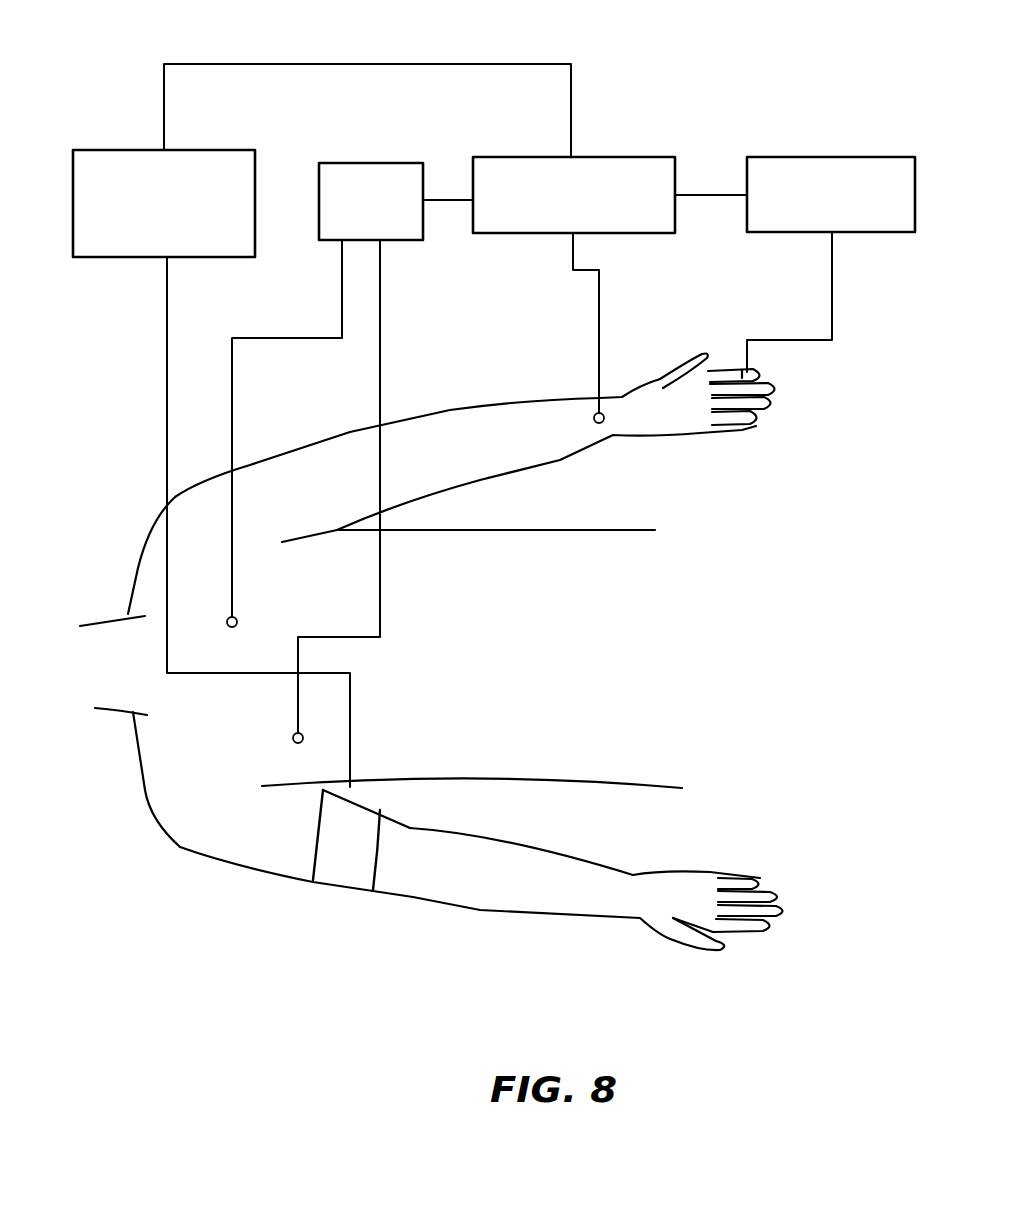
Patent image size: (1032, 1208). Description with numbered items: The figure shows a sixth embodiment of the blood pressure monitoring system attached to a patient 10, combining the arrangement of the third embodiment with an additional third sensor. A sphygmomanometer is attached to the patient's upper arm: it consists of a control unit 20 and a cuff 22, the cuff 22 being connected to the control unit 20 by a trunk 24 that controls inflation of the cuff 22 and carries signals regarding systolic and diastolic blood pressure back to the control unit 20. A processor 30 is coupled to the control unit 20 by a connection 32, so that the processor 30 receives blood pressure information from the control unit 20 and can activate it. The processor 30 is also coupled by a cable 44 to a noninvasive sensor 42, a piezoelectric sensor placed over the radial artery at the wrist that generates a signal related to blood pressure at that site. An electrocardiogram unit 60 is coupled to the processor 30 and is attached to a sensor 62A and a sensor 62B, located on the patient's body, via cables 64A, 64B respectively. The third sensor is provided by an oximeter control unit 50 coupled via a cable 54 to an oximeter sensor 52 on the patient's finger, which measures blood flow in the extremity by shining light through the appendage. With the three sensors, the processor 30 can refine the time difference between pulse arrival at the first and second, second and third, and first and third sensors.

The patient 10 is at (138, 568).
The control unit 20 is at (192, 150).
The cuff 22 is at (378, 803).
The trunk 24 is at (352, 712).
The processor 30 is at (590, 157).
The processor-cuff connection line 32 is at (530, 62).
The noninvasive sensor 42 is at (604, 424).
The cable 44 is at (598, 290).
The oximeter control unit 50 is at (867, 157).
The oximeter sensor 52 is at (740, 367).
The cable 54 is at (832, 287).
The electrocardiogram (ECG) unit 60 is at (403, 163).
The sensor 62A is at (238, 618).
The sensor 62B is at (293, 738).
The cable 64A is at (342, 283).
The cable 64B is at (382, 325).